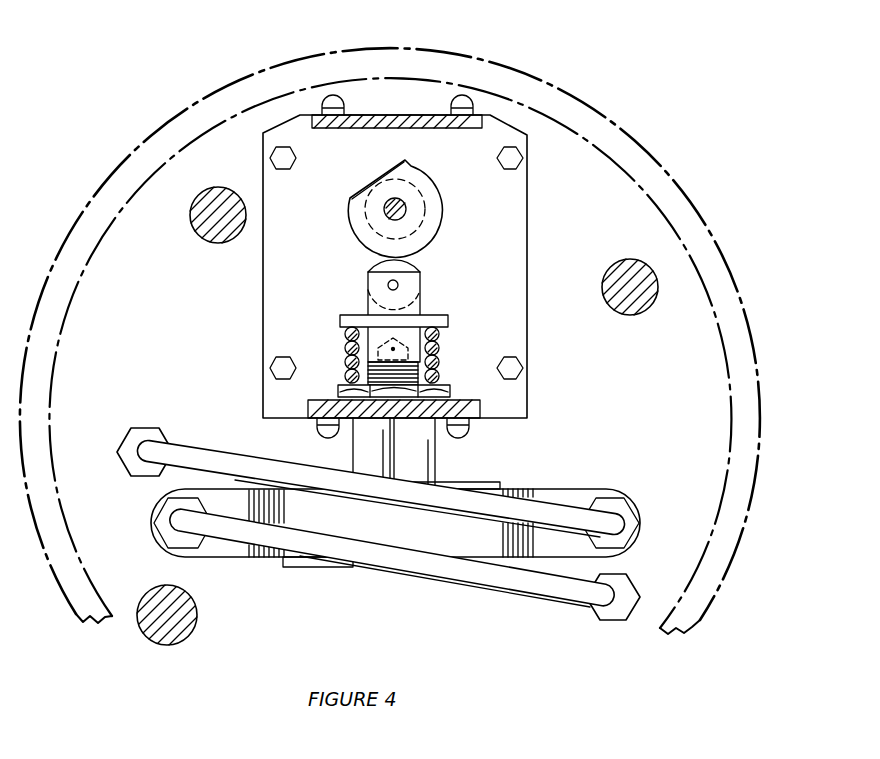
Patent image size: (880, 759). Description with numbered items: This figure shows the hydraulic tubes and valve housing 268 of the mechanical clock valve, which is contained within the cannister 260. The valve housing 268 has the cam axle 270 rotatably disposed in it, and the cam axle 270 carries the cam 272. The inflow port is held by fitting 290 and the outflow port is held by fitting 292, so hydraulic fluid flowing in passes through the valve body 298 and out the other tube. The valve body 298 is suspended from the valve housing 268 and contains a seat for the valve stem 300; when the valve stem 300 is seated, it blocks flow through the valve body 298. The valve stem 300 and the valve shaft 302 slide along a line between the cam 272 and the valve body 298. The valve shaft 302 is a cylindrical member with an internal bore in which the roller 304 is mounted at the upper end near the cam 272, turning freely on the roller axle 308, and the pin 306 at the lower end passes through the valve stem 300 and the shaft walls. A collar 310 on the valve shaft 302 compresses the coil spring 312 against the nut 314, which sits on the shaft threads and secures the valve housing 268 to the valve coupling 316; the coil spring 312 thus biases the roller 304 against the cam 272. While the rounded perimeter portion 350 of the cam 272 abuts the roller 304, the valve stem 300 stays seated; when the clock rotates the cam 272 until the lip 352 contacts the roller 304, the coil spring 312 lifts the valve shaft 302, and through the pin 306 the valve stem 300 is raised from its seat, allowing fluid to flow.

The cannister 260 is at (685, 185).
The valve housing 268 is at (515, 180).
The cam axle 270 is at (405, 200).
The cam 272 is at (435, 210).
The fitting 290 is at (617, 578).
The fitting 292 is at (128, 450).
The valve body 298 is at (565, 497).
The valve stem 300 is at (410, 351).
The valve shaft 302 is at (422, 305).
The roller 304 is at (413, 265).
The pin 306 is at (393, 349).
The roller axle 308 is at (388, 285).
The collar 310 is at (450, 320).
The coil spring 312 is at (440, 337).
The nut 314 is at (450, 397).
The valve coupling 316 is at (420, 457).
The rounded perimeter portion 350 is at (350, 225).
The lip 352 is at (383, 185).